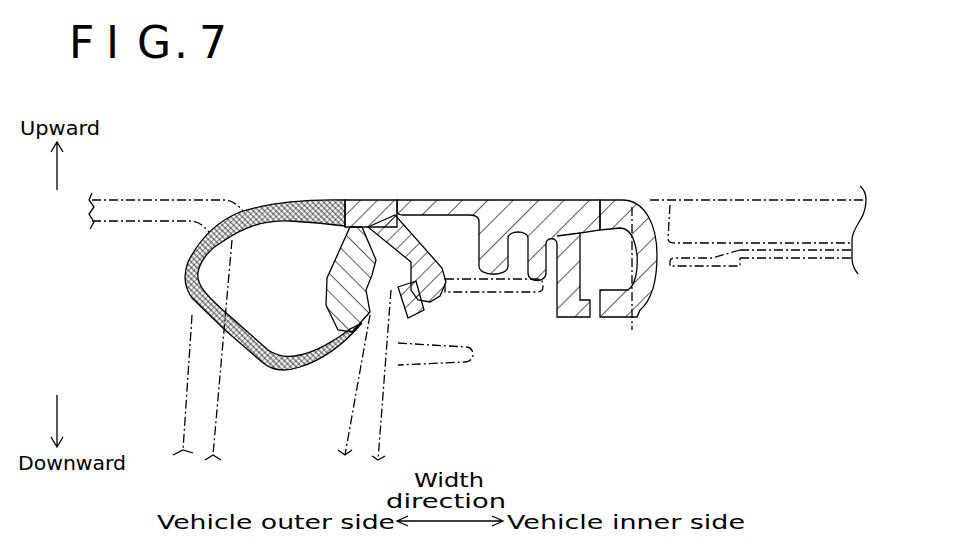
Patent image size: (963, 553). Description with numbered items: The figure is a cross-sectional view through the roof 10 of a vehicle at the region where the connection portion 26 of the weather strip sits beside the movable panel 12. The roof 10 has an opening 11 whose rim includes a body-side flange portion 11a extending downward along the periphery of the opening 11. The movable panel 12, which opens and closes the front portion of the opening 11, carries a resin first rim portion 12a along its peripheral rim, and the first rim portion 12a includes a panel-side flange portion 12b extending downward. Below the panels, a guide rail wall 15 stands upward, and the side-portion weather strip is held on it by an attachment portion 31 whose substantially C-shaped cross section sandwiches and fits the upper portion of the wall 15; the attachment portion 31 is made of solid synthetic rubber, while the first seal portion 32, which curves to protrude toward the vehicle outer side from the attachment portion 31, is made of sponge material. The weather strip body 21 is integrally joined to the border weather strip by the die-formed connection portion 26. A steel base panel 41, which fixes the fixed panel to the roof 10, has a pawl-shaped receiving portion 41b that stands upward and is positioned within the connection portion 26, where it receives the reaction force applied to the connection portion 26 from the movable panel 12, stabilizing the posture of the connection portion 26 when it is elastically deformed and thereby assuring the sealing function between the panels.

The roof 10 is at (140, 200).
The opening 11 is at (256, 240).
The body-side flange portion 11a is at (212, 440).
The movable panel 12 is at (775, 200).
The first rim portion 12a is at (648, 202).
The panel-side flange portion 12b is at (636, 305).
The wall 15 is at (384, 412).
The weather strip body 21 is at (350, 190).
The connection portion 26 is at (492, 190).
The attachment portion 31 is at (322, 296).
The first seal portion 32 is at (298, 201).
The base panel 41 is at (499, 293).
The receiving portion 41b is at (560, 200).